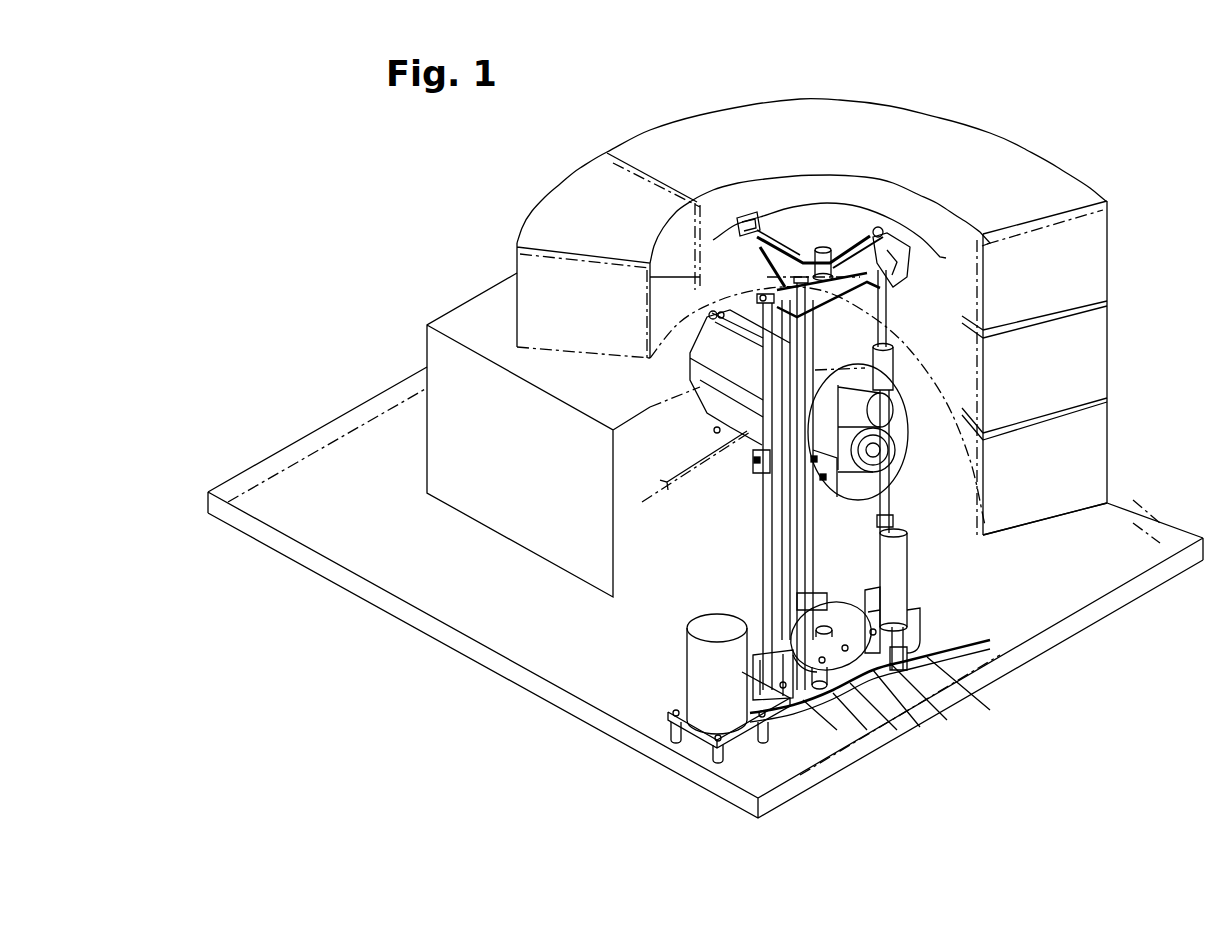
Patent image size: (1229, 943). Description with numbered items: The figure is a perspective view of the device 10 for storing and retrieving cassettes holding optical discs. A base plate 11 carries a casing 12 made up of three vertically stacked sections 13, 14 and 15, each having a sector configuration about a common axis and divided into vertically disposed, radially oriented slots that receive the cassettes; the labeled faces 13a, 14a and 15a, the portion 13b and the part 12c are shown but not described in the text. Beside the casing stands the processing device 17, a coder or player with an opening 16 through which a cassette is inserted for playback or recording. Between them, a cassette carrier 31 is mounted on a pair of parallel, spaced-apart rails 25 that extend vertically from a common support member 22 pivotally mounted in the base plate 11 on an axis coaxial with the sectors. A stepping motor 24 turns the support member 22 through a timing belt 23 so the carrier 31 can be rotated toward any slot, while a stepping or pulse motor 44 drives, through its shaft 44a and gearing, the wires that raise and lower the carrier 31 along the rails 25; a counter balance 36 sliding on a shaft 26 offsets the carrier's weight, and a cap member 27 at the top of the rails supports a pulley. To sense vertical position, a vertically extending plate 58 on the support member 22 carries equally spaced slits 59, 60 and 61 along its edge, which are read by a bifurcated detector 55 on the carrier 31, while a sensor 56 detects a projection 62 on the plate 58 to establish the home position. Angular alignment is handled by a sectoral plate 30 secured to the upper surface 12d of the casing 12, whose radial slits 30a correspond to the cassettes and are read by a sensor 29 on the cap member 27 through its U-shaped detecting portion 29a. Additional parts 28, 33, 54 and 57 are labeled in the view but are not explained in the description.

The device for storing and retrieving cassettes 10 is at (775, 291).
The base plate 11 is at (1055, 605).
The casing 12 is at (1115, 305).
The cylinder 12c is at (610, 385).
The upper surface 12d is at (1060, 185).
The section 13 is at (1110, 261).
The upper block face 13a is at (1083, 293).
The left block 13b is at (527, 323).
The section 14 is at (1115, 357).
The middle block face 14a is at (1097, 385).
The section 15 is at (1115, 439).
The lower block face 15a is at (1093, 478).
The opening 16 is at (684, 483).
The processing device 17 is at (450, 461).
The support member 22 is at (873, 673).
The timing belt 23 is at (780, 720).
The stepping motor 24 is at (690, 673).
The rails 25 is at (880, 330).
The shaft 26 is at (924, 489).
The cap member 27 is at (871, 224).
The pivot bolt 28 is at (801, 247).
The sensor 29 is at (749, 208).
The U-shaped detecting portion 29a is at (741, 200).
The sectoral plate 30 is at (853, 182).
The slits 30a is at (713, 240).
The cassette carrier 31 is at (903, 440).
The bracket 33 is at (905, 225).
The counter balance 36 is at (902, 587).
The stepping or pulse motor 44 is at (850, 670).
The shaft 44a is at (840, 693).
The collar 54 is at (893, 518).
The detector 55 is at (757, 475).
The sensor 56 is at (821, 478).
The rod mount 57 is at (797, 683).
The vertically extending plate 58 is at (820, 660).
The slit 59 is at (803, 357).
The slit 60 is at (812, 462).
The slit 61 is at (807, 562).
The projection 62 is at (906, 663).